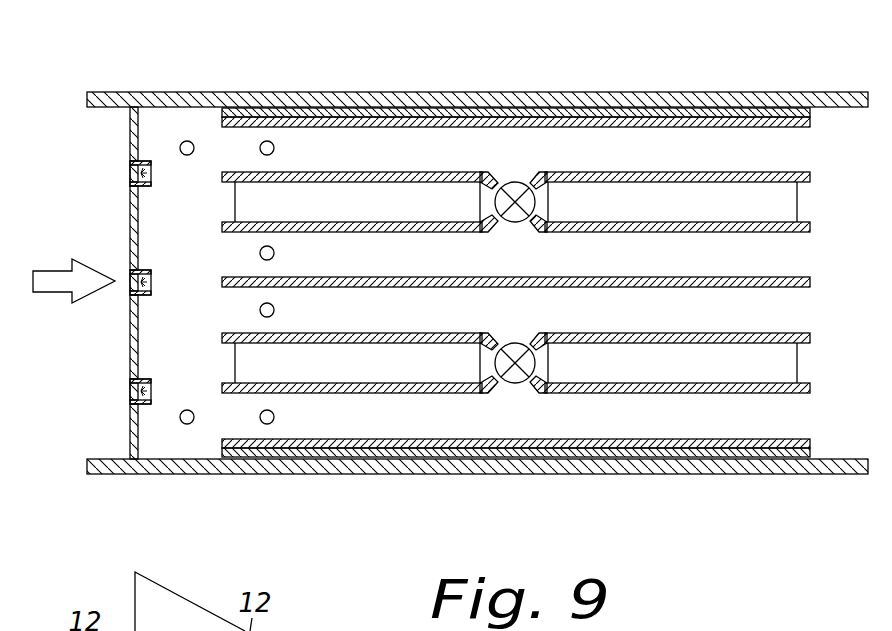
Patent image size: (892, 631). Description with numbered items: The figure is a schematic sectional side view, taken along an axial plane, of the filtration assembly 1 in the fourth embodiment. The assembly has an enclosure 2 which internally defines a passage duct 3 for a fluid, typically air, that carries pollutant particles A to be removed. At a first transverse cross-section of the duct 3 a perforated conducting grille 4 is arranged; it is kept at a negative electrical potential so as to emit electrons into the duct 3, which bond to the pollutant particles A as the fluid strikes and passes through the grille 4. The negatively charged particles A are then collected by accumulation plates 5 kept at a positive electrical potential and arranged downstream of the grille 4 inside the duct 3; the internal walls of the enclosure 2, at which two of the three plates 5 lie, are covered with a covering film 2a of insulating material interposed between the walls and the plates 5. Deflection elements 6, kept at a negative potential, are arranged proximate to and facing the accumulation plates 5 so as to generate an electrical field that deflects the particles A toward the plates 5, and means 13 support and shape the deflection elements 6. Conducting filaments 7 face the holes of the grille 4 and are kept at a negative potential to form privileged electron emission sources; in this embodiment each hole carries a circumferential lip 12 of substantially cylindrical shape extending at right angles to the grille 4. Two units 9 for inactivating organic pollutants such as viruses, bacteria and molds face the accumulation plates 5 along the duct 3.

The filtration assembly 1 is at (688, 519).
The enclosure 2 is at (178, 91).
The covering film 2a is at (600, 112).
The passage duct 3 is at (483, 145).
The perforated conducting grille 4 is at (130, 218).
The accumulation plate 5 is at (726, 127).
The deflection element 6 is at (348, 222).
The conducting filament 7 is at (155, 186).
The unit for inactivating organic pollutants 9 is at (515, 195).
The circumferential lip 12 is at (140, 161).
The means for supporting and shaping the deflection elements 13 is at (303, 187).
The pollutant particles A is at (185, 142).